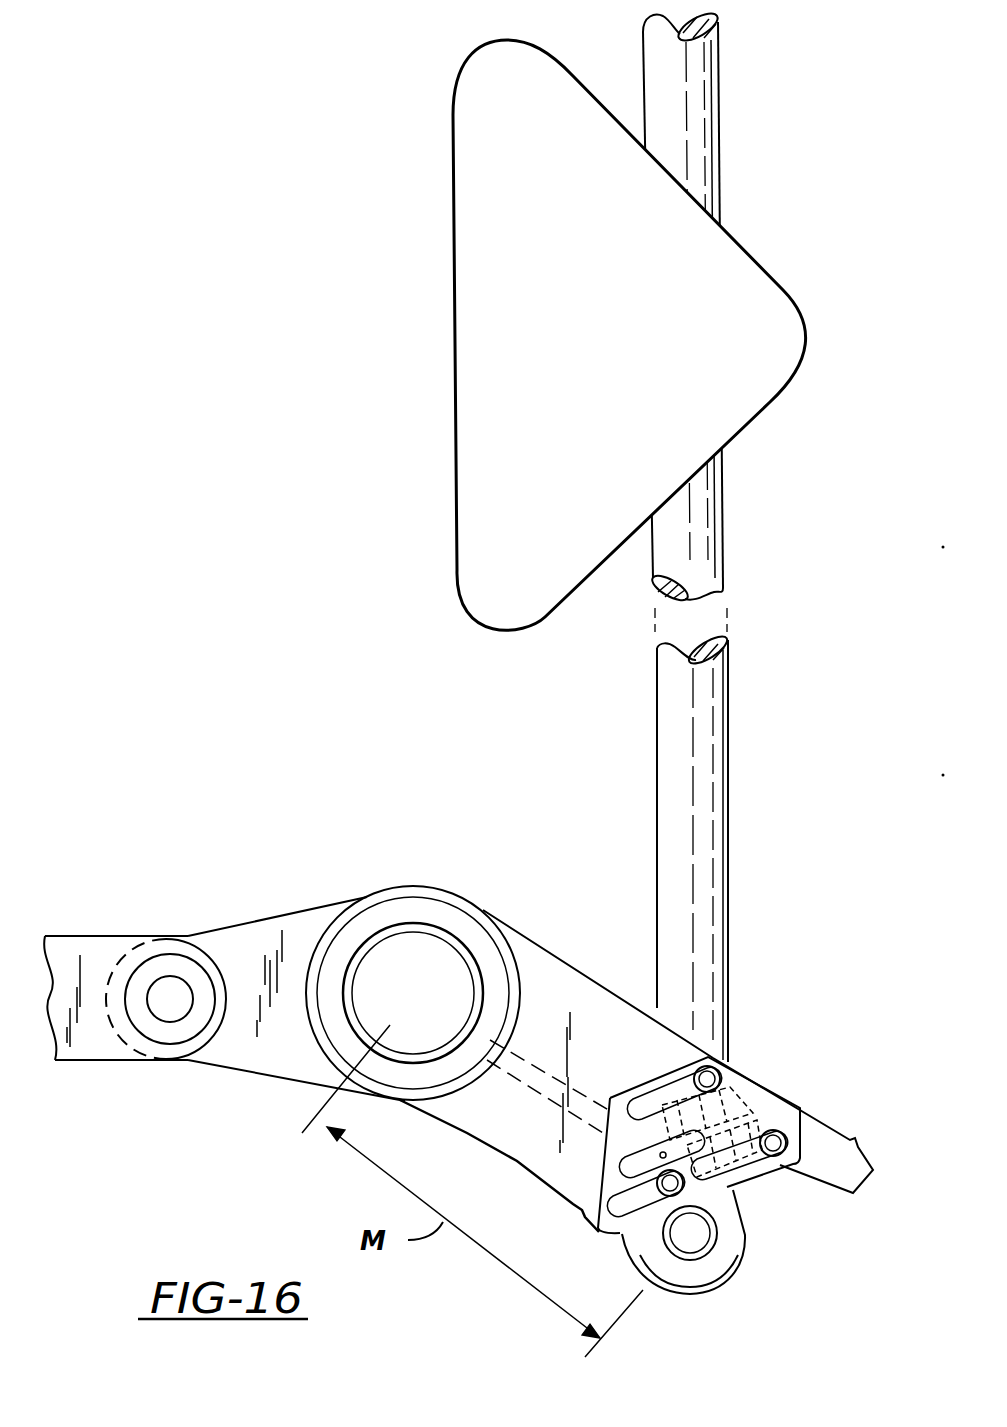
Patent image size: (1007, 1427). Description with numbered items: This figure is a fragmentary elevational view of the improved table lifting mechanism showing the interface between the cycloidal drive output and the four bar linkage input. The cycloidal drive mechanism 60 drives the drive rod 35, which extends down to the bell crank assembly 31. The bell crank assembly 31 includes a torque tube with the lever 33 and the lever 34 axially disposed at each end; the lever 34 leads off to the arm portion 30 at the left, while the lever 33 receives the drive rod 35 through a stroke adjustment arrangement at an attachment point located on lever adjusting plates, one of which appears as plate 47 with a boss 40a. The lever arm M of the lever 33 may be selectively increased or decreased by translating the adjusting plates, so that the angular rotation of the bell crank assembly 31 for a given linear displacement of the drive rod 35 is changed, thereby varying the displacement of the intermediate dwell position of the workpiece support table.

The arm section 30 is at (97, 1052).
The bell crank assembly 31 is at (512, 887).
The lever 33 is at (574, 967).
The lever 34 is at (247, 925).
The drive rod 35 is at (712, 776).
The boss 40a is at (705, 1257).
The bracket plate 47 is at (755, 1078).
The cycloidal drive mechanism 60 is at (752, 415).